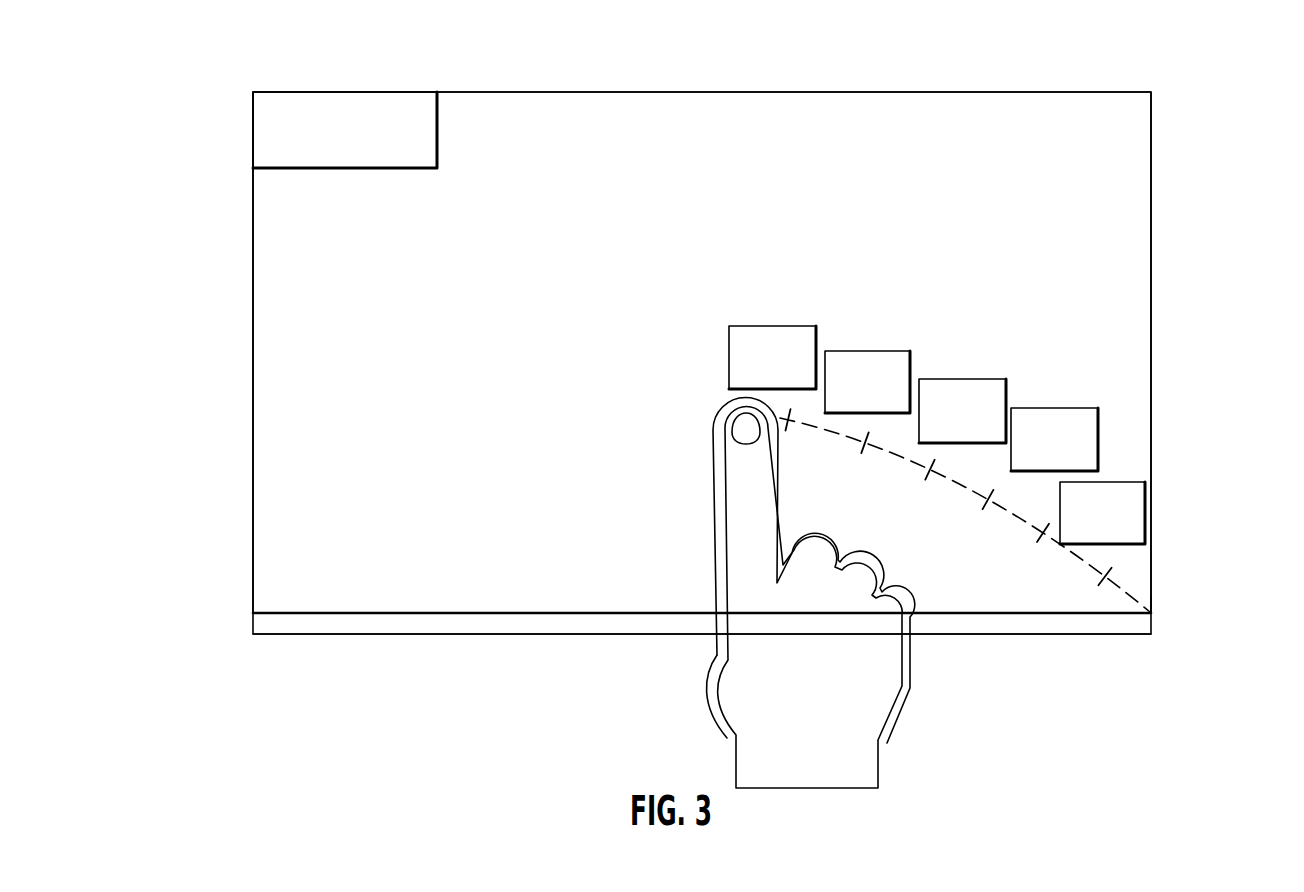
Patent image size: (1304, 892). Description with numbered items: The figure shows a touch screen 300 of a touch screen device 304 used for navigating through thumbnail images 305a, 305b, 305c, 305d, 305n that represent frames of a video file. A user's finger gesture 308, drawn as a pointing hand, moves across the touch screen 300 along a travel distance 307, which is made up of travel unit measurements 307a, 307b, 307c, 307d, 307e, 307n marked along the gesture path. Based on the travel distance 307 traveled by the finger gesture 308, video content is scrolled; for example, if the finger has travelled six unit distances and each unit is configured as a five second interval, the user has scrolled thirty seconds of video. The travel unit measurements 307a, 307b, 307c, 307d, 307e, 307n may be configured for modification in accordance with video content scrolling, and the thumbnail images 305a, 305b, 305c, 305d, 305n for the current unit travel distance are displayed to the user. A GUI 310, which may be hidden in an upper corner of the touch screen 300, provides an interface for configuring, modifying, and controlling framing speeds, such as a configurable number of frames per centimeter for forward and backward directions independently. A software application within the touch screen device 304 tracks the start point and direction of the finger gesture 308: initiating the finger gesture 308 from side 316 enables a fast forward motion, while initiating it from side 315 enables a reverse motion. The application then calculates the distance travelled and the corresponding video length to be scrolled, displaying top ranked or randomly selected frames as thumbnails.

The touch screen 300 is at (979, 77).
The touch screen device 304 is at (314, 80).
The thumbnail image 305a is at (790, 325).
The thumbnail image 305b is at (885, 350).
The thumbnail image 305c is at (979, 378).
The thumbnail image 305d is at (1072, 407).
The thumbnail image 305n is at (1116, 481).
The travel distance 307 is at (968, 565).
The travel unit measurement 307a is at (1117, 619).
The travel unit measurement 307b is at (1064, 590).
The travel unit measurement 307c is at (1003, 537).
The travel unit measurement 307d is at (928, 500).
The travel unit measurement 307e is at (881, 472).
The travel unit measurement 307n is at (825, 461).
The finger gesture 308 is at (905, 779).
The GUI 310 is at (361, 154).
The side 315 is at (1184, 617).
The side 316 is at (314, 650).